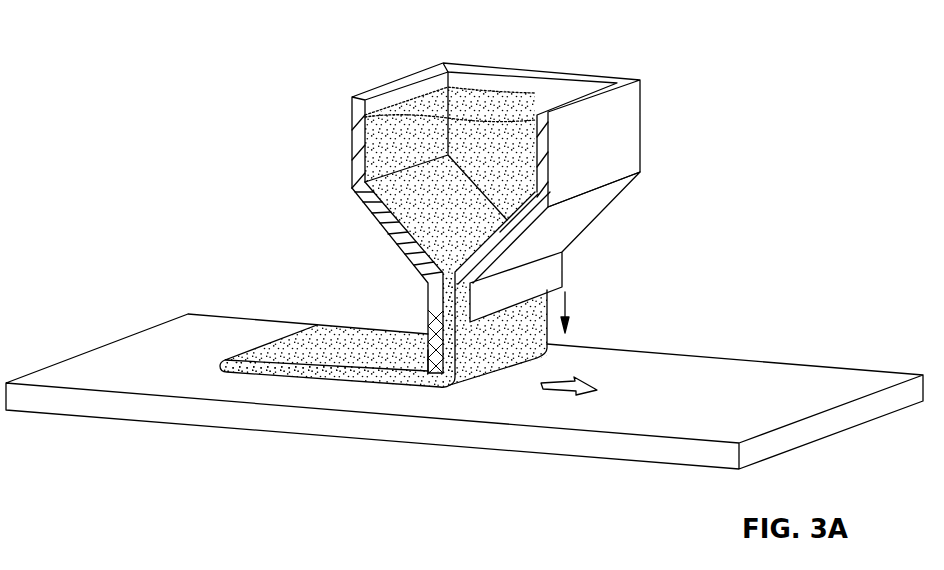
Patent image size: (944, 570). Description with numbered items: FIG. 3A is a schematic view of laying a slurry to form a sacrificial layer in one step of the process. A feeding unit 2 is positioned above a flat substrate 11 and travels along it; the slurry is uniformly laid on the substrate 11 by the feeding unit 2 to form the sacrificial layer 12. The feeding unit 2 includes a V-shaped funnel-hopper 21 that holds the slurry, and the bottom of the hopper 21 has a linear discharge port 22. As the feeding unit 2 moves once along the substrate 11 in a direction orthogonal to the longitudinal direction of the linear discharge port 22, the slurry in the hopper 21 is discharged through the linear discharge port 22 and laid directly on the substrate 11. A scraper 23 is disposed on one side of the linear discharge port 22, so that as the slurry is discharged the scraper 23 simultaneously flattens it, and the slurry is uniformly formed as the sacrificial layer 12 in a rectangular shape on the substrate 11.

The feeding unit 2 is at (628, 132).
The substrate 11 is at (84, 403).
The sacrificial layer 12 is at (258, 342).
The V-shaped funnel-hopper 21 is at (497, 92).
The linear discharge port 22 is at (450, 307).
The scraper 23 is at (428, 348).